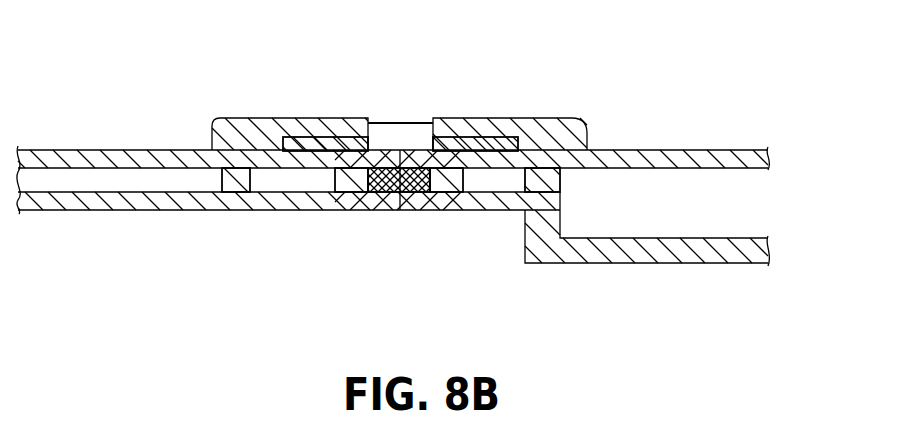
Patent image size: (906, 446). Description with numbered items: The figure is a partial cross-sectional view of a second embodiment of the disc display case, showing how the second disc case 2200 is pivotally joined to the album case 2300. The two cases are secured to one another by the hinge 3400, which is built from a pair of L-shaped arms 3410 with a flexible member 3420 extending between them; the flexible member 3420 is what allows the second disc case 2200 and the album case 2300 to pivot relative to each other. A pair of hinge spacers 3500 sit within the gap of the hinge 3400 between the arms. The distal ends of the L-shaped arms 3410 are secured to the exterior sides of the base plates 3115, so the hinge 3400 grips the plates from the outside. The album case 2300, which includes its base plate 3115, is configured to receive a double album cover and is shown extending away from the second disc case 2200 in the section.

The base plate 3115 is at (712, 148).
The second disc case 2200 is at (110, 212).
The album case 2300 is at (632, 265).
The L-shaped arms 3410 is at (210, 120).
The flexible member 3420 is at (402, 121).
The hinge 3400 is at (577, 117).
The hinge spacers 3500 is at (482, 118).